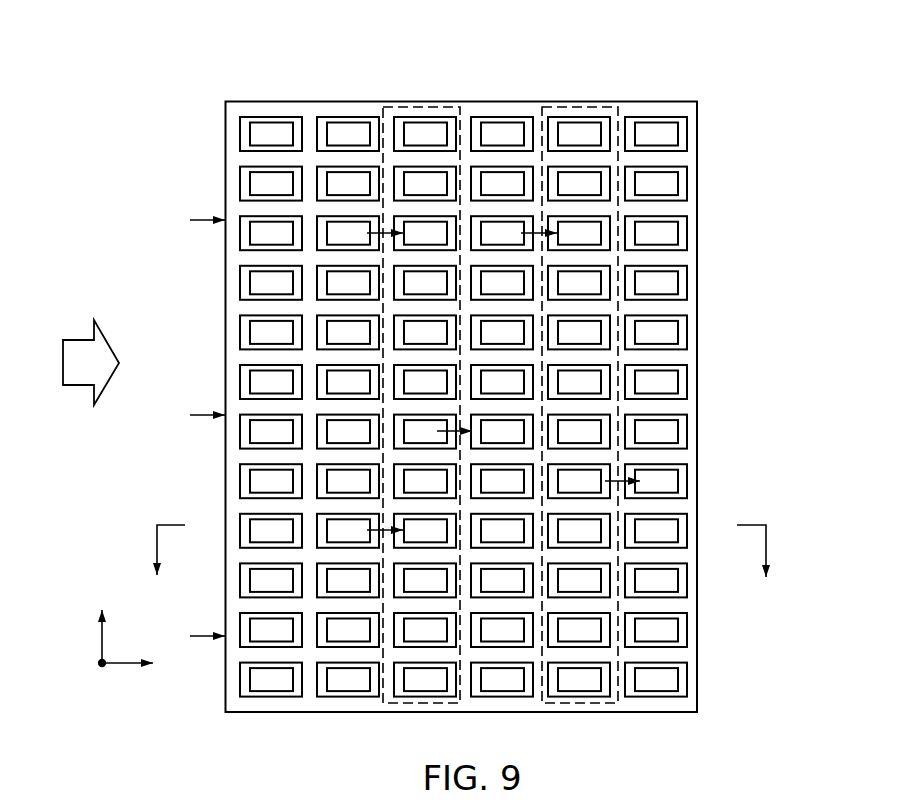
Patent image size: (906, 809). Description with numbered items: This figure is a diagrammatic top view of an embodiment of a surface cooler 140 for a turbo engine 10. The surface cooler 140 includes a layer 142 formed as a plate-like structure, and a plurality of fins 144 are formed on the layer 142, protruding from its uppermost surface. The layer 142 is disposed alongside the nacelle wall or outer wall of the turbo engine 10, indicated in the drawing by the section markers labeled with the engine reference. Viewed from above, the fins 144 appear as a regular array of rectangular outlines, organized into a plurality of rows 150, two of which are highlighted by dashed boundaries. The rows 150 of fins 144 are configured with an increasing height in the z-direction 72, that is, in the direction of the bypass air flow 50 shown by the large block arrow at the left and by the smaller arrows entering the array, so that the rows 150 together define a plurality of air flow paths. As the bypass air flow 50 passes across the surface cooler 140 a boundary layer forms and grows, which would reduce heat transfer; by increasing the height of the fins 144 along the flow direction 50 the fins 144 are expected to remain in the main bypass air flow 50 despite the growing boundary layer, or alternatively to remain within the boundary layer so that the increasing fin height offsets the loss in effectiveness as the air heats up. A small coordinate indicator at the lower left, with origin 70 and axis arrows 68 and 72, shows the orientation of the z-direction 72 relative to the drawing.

The surface cooler 140 is at (159, 162).
The layer 142 is at (681, 354).
The fins 144 is at (680, 232).
The rows of fins 150 is at (408, 104).
The bypass air flow 50 is at (72, 385).
The turbo engine 10 is at (462, 567).
The vertical axis 68 is at (100, 637).
The origin 70 is at (98, 665).
The z-direction 72 is at (130, 668).